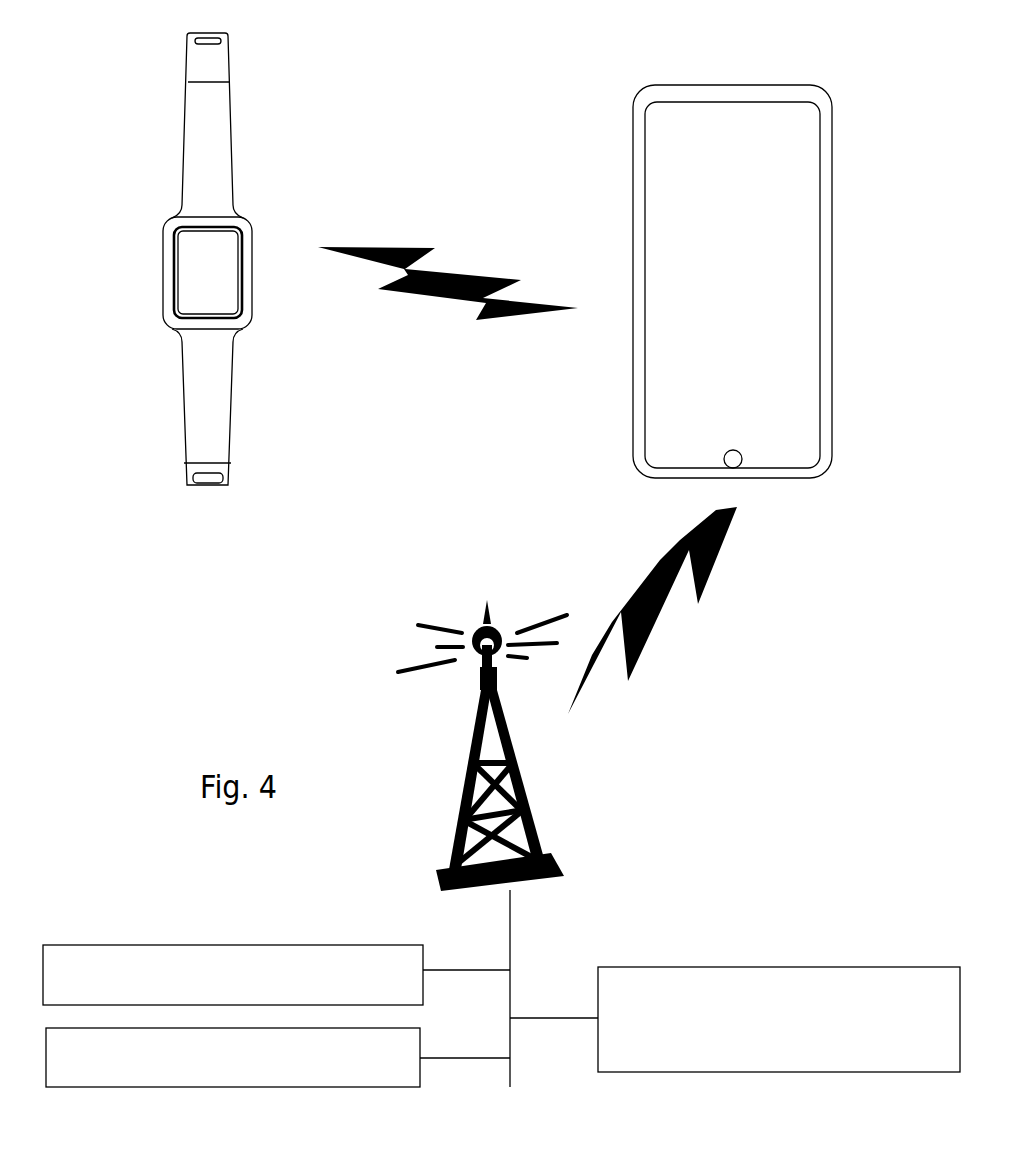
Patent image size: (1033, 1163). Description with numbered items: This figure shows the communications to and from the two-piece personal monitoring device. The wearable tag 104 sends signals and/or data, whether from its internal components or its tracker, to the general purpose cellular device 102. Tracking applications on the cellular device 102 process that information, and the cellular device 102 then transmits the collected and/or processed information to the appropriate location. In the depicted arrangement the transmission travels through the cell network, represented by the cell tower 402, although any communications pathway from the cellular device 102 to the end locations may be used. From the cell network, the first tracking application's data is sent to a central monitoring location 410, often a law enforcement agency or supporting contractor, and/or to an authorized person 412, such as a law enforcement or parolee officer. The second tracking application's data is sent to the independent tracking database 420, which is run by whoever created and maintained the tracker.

The general purpose cellular device 102 is at (605, 403).
The wearable tag 104 is at (276, 381).
The cell tower 402 is at (392, 652).
The central monitoring location 410 is at (233, 975).
The authorized person 412 is at (233, 1057).
The independent tracking database 420 is at (779, 1019).